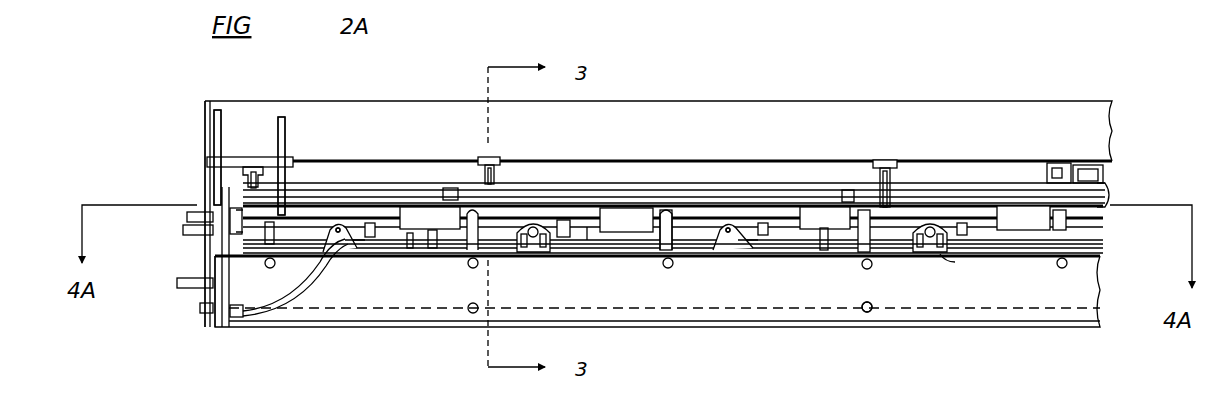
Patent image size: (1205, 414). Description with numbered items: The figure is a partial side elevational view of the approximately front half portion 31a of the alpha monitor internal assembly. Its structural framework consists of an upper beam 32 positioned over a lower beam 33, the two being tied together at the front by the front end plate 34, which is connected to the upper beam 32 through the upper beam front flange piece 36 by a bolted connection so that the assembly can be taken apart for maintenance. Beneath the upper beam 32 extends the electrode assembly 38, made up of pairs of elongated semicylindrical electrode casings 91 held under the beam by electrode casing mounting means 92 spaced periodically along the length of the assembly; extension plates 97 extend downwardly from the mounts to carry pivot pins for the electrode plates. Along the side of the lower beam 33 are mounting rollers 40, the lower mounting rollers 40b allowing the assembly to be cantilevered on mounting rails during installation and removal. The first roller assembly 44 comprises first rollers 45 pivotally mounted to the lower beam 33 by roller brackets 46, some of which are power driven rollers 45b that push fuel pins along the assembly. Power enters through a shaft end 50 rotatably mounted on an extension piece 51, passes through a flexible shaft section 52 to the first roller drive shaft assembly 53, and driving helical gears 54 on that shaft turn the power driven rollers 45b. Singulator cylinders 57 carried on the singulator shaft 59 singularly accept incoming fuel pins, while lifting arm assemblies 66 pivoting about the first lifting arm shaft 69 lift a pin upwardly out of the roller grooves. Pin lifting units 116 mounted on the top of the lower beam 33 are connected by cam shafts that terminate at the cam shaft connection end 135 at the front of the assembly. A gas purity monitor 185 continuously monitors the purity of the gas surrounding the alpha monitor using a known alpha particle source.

The front half portion 31a is at (874, 98).
The upper beam 32 is at (862, 136).
The lower beam 33 is at (980, 308).
The front end plate 34 is at (212, 178).
The upper beam front flange piece 36 is at (210, 157).
The electrode assembly 38 is at (517, 184).
The mounting rollers 40 is at (668, 268).
The lower mounting rollers 40b is at (867, 312).
The first roller assembly 44 is at (283, 244).
The first rollers 45 is at (343, 243).
The power driven rollers 45b is at (538, 258).
The roller brackets 46 is at (330, 241).
The shaft end 50 is at (207, 317).
The extension piece 51 is at (225, 328).
The flexible shaft section 52 is at (300, 283).
The first roller drive shaft assembly 53 is at (432, 262).
The driving helical gears 54 is at (535, 251).
The singulator cylinders 57 is at (836, 226).
The singulator shaft 59 is at (307, 217).
The lifting arm assemblies 66 is at (370, 224).
The first lifting arm shaft 69 is at (587, 228).
The electrode casings 91 is at (787, 193).
The electrode casing mounting means 92 is at (253, 177).
The extension plates 97 is at (944, 259).
The pin lifting units 116 is at (670, 207).
The cam shaft connection end 135 is at (177, 285).
The gas purity monitor 185 is at (1067, 161).